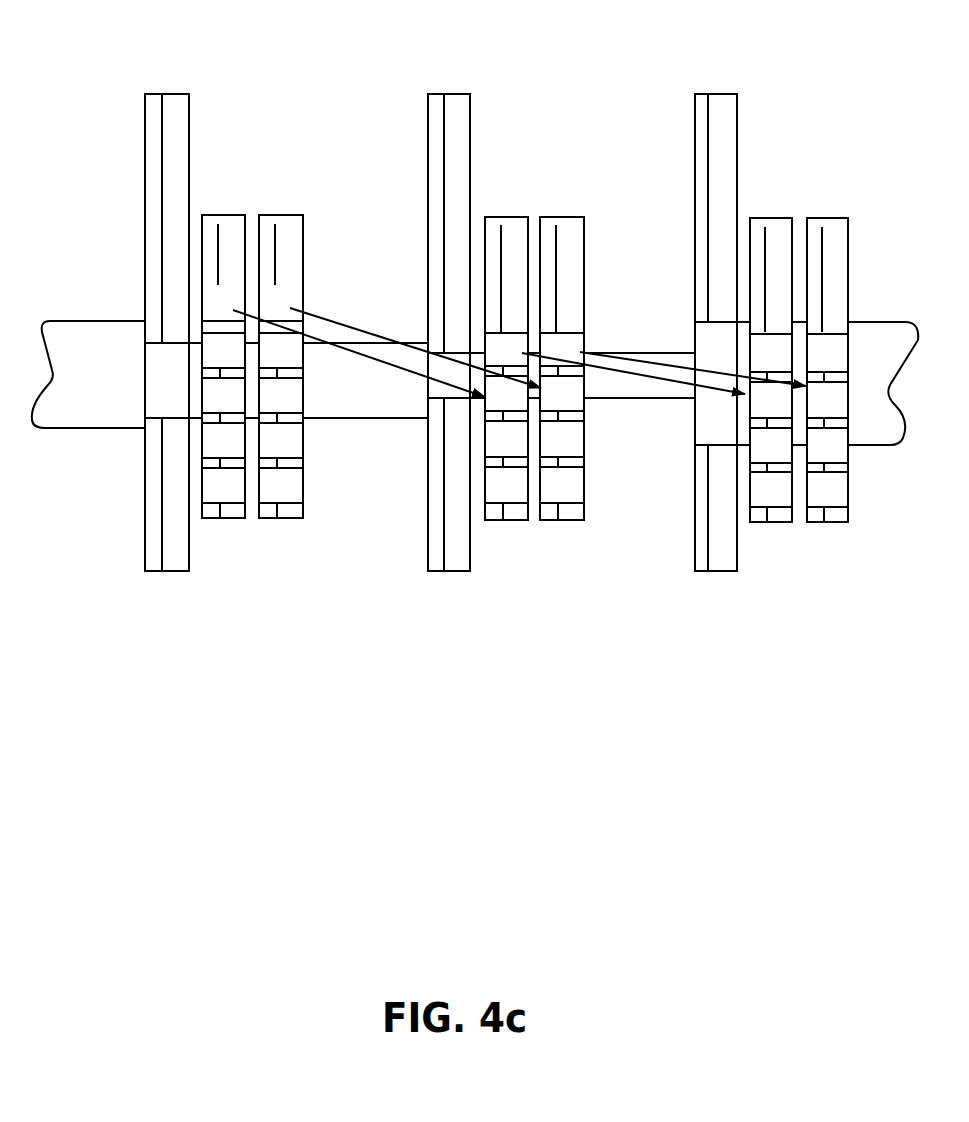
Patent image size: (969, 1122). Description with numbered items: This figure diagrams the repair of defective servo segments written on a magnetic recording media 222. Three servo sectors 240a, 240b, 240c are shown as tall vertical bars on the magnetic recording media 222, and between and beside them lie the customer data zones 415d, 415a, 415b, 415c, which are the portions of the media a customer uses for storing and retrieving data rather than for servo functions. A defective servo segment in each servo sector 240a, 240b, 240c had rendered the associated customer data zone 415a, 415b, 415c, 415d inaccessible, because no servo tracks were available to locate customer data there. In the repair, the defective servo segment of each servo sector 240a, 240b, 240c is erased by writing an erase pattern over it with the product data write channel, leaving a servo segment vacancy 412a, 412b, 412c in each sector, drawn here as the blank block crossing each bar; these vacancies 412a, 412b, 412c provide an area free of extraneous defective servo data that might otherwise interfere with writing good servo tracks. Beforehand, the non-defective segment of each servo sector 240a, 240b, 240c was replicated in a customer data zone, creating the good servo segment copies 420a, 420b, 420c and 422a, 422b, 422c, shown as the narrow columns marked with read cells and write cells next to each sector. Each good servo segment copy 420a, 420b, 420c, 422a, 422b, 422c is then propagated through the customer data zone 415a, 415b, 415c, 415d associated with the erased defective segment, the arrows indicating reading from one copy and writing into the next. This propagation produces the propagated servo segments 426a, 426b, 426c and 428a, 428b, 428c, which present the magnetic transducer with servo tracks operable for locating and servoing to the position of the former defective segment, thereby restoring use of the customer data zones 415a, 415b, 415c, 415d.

The magnetic recording media 222 is at (96, 118).
The servo sector 240a is at (172, 105).
The servo sector 240b is at (455, 105).
The servo sector 240c is at (722, 105).
The good servo segment copy 420a is at (232, 223).
The good servo segment copy 420b is at (515, 223).
The good servo segment copy 420c is at (780, 223).
The good servo segment copy 422a is at (287, 223).
The good servo segment copy 422b is at (572, 223).
The good servo segment copy 422c is at (838, 223).
The servo segment vacancy 412a is at (176, 403).
The servo segment vacancy 412b is at (448, 392).
The servo segment vacancy 412c is at (717, 432).
The customer data zone 415a is at (308, 380).
The customer data zone 415b is at (623, 358).
The customer data zone 415c is at (827, 383).
The customer data zone 415d is at (88, 374).
The propagated servo segment 426a is at (230, 513).
The propagated servo segment 426b is at (515, 520).
The propagated servo segment 426c is at (780, 522).
The propagated servo segment 428a is at (287, 513).
The propagated servo segment 428b is at (567, 520).
The propagated servo segment 428c is at (835, 522).